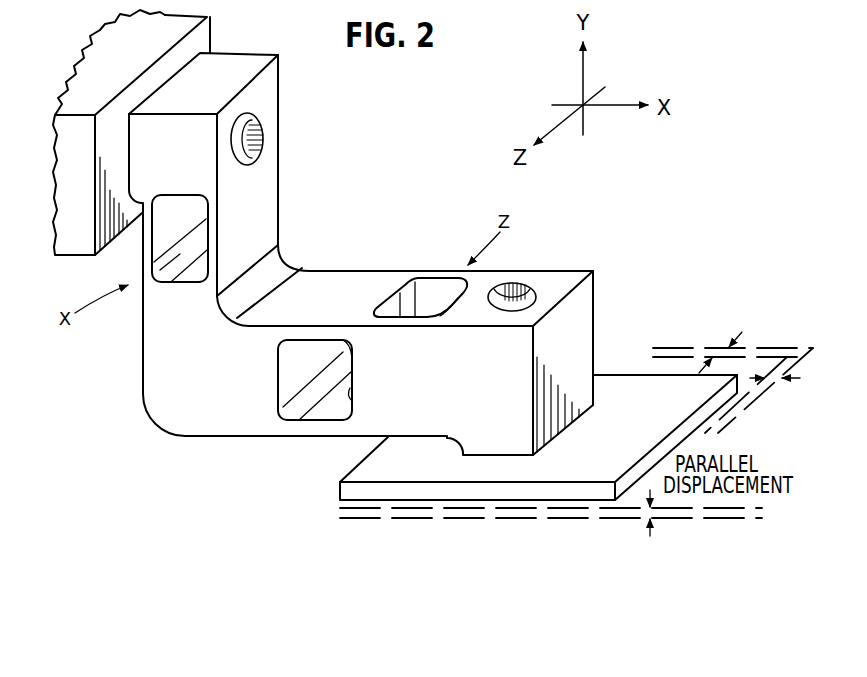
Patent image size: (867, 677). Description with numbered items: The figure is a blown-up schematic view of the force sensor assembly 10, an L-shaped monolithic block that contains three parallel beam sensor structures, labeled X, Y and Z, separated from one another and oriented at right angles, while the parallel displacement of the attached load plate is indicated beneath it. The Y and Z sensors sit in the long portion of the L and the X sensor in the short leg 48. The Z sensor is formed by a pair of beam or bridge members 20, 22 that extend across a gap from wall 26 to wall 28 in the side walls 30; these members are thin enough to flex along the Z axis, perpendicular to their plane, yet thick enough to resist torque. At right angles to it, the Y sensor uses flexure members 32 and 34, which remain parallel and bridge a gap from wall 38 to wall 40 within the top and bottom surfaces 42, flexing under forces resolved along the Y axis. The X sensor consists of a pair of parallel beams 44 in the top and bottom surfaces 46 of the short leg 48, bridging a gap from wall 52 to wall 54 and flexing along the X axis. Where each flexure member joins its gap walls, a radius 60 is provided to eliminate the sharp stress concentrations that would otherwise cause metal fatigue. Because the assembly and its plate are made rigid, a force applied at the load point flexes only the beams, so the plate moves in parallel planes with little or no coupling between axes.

The force sensor assembly 10 is at (357, 196).
The beam or bridge member 20 is at (440, 278).
The beam or bridge member 22 is at (418, 325).
The wall 26 is at (387, 307).
The wall 28 is at (446, 302).
The side walls 30 is at (372, 269).
The flexure member 32 is at (316, 333).
The flexure member 34 is at (311, 431).
The wall 38 is at (284, 376).
The wall 40 is at (351, 401).
The top and bottom surfaces 42 is at (321, 277).
The parallel beams 44 is at (217, 226).
The top and bottom surfaces 46 is at (218, 253).
The short leg 48 is at (240, 53).
The wall 52 is at (181, 191).
The wall 54 is at (193, 279).
The radius 60 is at (160, 282).